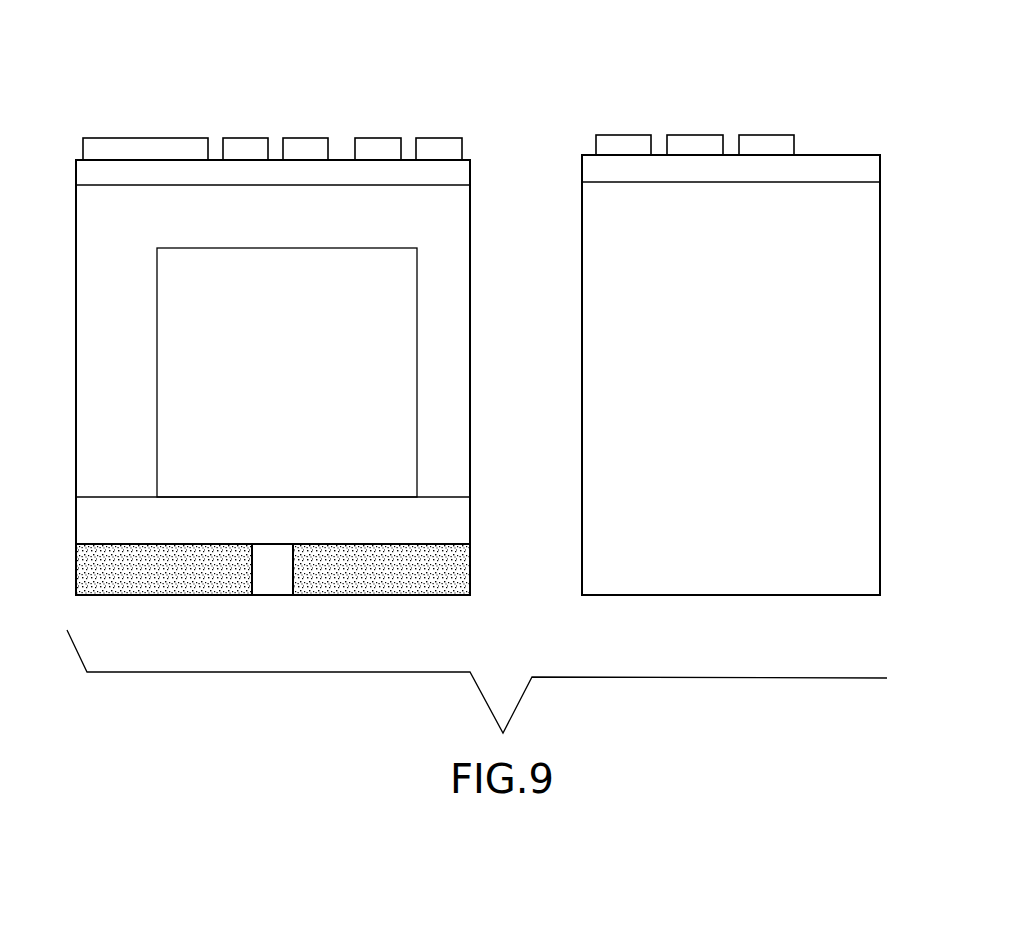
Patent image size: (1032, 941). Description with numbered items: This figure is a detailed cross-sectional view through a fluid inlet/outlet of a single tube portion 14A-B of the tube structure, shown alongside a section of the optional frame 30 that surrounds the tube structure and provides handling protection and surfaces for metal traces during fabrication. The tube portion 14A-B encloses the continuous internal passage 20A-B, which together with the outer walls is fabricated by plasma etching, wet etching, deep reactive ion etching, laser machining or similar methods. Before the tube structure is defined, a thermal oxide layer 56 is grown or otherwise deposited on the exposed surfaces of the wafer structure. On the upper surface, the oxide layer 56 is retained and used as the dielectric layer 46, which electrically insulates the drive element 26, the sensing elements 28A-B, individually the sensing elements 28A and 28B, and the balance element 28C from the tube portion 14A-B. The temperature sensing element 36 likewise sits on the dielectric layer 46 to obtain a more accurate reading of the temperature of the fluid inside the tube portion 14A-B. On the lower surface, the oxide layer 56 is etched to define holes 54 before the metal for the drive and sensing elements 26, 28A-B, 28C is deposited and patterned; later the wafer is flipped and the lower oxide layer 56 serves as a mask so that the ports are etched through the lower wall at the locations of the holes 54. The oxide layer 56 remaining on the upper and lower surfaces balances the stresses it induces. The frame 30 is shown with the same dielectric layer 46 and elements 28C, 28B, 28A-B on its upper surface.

The tube portion 14A-B is at (145, 326).
The internal passage 20A-B is at (360, 403).
The drive element 26 is at (163, 137).
The temperature sensing element 36 is at (305, 138).
The sensing element 28A is at (440, 138).
The sensing element 28B is at (694, 137).
The balance element 28C is at (383, 138).
The sensing elements 28A-B is at (762, 138).
The frame 30 is at (585, 426).
The dielectric layer 46 is at (460, 171).
The oxide layer 56 is at (470, 568).
The hole 54 is at (272, 575).